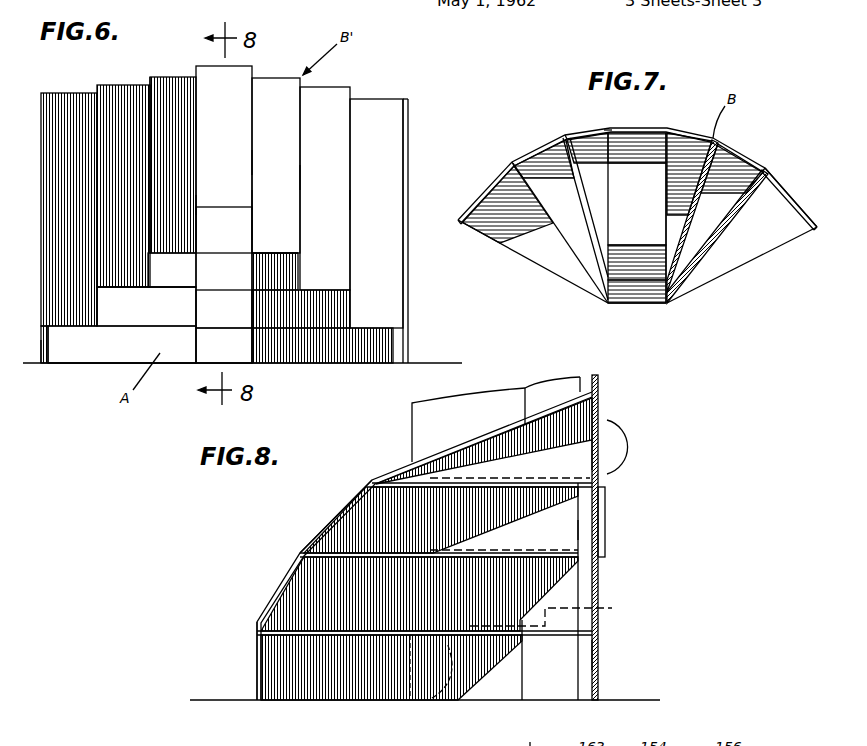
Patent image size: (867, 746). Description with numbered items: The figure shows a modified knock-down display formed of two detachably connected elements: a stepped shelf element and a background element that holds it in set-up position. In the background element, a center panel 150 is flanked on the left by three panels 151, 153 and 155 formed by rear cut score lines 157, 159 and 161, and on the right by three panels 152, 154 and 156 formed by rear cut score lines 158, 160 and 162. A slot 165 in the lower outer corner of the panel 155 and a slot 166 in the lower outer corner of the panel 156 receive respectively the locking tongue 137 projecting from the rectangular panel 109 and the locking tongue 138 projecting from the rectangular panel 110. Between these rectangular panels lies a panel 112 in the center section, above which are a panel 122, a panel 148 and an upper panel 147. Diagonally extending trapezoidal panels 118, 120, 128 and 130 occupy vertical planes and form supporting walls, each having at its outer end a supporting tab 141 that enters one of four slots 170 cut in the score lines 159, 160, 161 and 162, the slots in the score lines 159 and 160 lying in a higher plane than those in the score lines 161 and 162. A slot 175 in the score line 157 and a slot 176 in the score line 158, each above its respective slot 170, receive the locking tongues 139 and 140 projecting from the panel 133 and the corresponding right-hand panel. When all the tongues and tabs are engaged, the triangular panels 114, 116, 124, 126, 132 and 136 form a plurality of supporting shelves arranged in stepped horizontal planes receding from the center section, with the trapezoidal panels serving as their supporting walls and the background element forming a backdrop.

In FIG. 6, the rectangular panel 109 is at (97, 355).
In FIG. 8, the rectangular panel 109 is at (326, 686).
In FIG. 6, the rectangular panel 110 is at (317, 364).
In FIG. 6, the panel 112 is at (224, 345).
In FIG. 8, the panel 112 is at (255, 648).
In FIG. 7, the triangular panel 114 is at (515, 228).
In FIG. 7, the triangular panel 116 is at (730, 255).
In FIG. 6, the trapezoidal panel 118 is at (128, 318).
In FIG. 8, the trapezoidal panel 118 is at (322, 582).
In FIG. 6, the trapezoidal panel 120 is at (316, 305).
In FIG. 6, the panel 122 is at (224, 309).
In FIG. 7, the panel 122 is at (630, 299).
In FIG. 8, the panel 122 is at (278, 588).
In FIG. 7, the triangular panel 124 is at (560, 233).
In FIG. 7, the triangular panel 126 is at (717, 217).
In FIG. 6, the trapezoidal panel 128 is at (172, 281).
In FIG. 8, the trapezoidal panel 128 is at (552, 534).
In FIG. 6, the trapezoidal panel 130 is at (275, 259).
In FIG. 7, the panel 132 is at (590, 192).
In FIG. 8, the panel 133 is at (562, 455).
In FIG. 7, the panel 136 is at (683, 183).
In FIG. 7, the locking tongue 137 is at (458, 216).
In FIG. 8, the locking tongue 137 is at (465, 680).
In FIG. 7, the locking tongue 138 is at (815, 225).
In FIG. 7, the locking tongue 139 is at (606, 130).
In FIG. 8, the locking tongue 139 is at (625, 445).
In FIG. 7, the locking tongue 140 is at (667, 133).
In FIG. 7, the supporting tab 141 is at (510, 158).
In FIG. 8, the supporting tab 141 is at (605, 490).
In FIG. 6, the panel 147 is at (252, 201).
In FIG. 7, the panel 147 is at (637, 204).
In FIG. 8, the panel 147 is at (470, 440).
In FIG. 6, the panel 148 is at (218, 262).
In FIG. 7, the panel 148 is at (615, 270).
In FIG. 8, the panel 148 is at (348, 504).
In FIG. 6, the center panel 150 is at (224, 214).
In FIG. 7, the center panel 150 is at (633, 131).
In FIG. 8, the center panel 150 is at (600, 380).
In FIG. 6, the panel 151 is at (167, 79).
In FIG. 7, the panel 151 is at (583, 134).
In FIG. 8, the panel 151 is at (587, 380).
In FIG. 6, the panel 152 is at (272, 92).
In FIG. 7, the panel 152 is at (712, 137).
In FIG. 6, the panel 153 is at (110, 84).
In FIG. 7, the panel 153 is at (548, 152).
In FIG. 8, the panel 153 is at (542, 384).
In FIG. 6, the panel 154 is at (330, 102).
In FIG. 7, the panel 154 is at (751, 160).
In FIG. 6, the panel 155 is at (50, 97).
In FIG. 7, the panel 155 is at (490, 181).
In FIG. 8, the panel 155 is at (475, 397).
In FIG. 6, the panel 156 is at (377, 118).
In FIG. 7, the panel 156 is at (810, 221).
In FIG. 6, the rear cut score line 157 is at (197, 118).
In FIG. 6, the rear cut score line 158 is at (253, 163).
In FIG. 6, the rear cut score line 159 is at (150, 105).
In FIG. 8, the rear cut score line 159 is at (578, 656).
In FIG. 6, the rear cut score line 160 is at (300, 177).
In FIG. 6, the rear cut score line 161 is at (100, 110).
In FIG. 8, the rear cut score line 161 is at (525, 407).
In FIG. 6, the rear cut score line 162 is at (358, 200).
In FIG. 6, the slot 165 is at (41, 357).
In FIG. 8, the slot 165 is at (445, 690).
In FIG. 6, the slot 166 is at (408, 349).
In FIG. 6, the slot 170 is at (299, 272).
In FIG. 8, the slot 170 is at (578, 533).
In FIG. 6, the slot 175 is at (197, 207).
In FIG. 6, the slot 176 is at (253, 231).